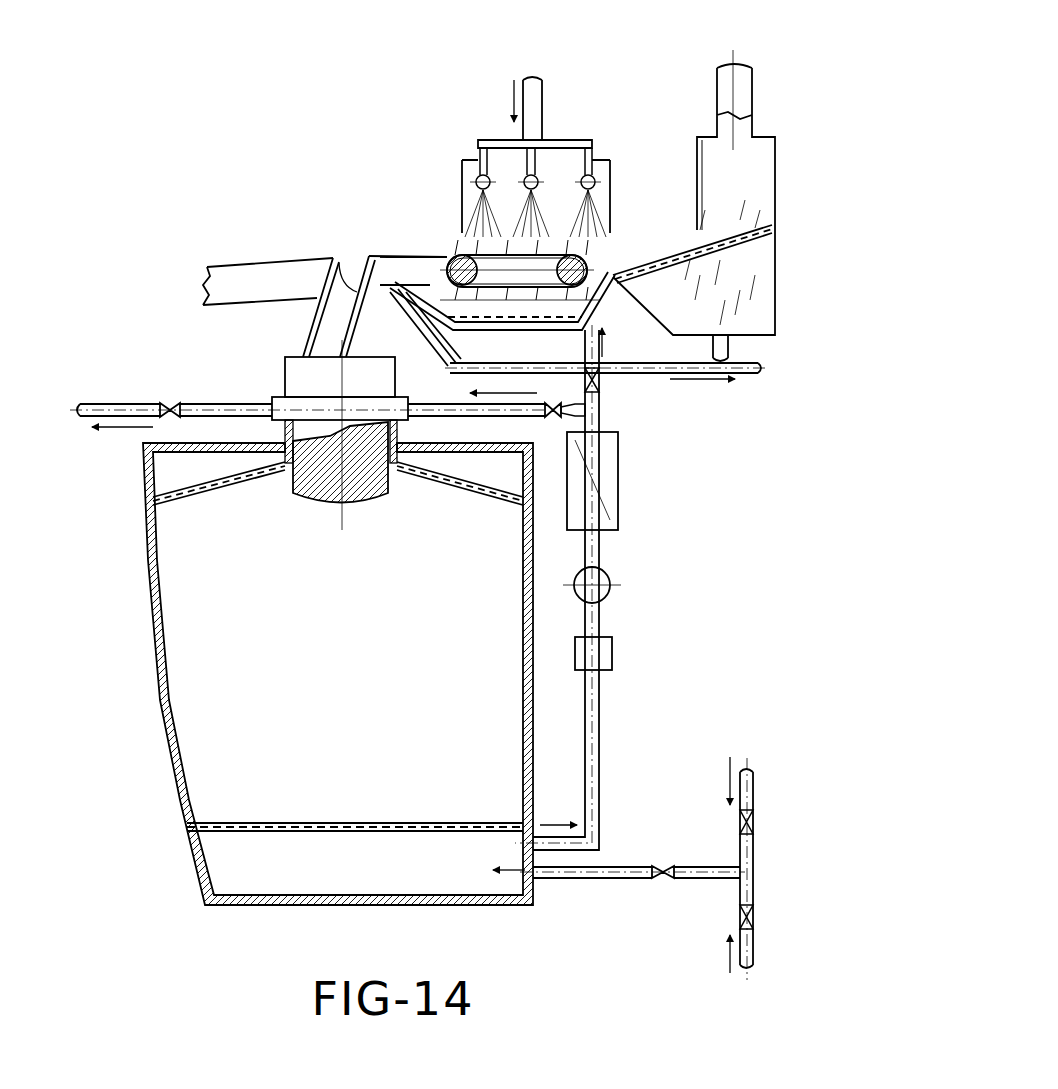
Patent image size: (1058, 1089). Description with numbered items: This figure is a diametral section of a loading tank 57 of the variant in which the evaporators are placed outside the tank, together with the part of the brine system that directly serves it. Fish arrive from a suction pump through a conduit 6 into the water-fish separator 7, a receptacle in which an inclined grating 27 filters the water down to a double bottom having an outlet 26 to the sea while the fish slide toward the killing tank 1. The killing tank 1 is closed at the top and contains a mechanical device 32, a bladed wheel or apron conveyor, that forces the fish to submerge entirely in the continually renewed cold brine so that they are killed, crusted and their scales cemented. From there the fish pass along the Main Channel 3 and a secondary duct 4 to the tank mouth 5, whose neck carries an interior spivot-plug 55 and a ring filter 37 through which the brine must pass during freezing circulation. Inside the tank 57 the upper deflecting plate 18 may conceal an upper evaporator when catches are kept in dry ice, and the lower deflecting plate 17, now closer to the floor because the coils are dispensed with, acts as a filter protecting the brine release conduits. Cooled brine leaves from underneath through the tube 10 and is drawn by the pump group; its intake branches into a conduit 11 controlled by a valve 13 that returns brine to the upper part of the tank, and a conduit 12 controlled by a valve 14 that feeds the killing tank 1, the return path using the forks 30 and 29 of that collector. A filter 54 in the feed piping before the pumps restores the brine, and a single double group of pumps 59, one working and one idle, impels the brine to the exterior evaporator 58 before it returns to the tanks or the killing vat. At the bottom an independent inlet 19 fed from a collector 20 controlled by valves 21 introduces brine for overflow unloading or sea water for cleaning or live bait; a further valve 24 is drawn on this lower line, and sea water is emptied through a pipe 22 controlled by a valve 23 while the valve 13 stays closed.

The killing tank 1 is at (462, 160).
The Main Channel 3 is at (262, 277).
The secondary duct 4 is at (343, 288).
The tank mouth 5 is at (290, 375).
The conduit 6 is at (722, 98).
The water-fish separator 7 is at (697, 152).
The tube 10 is at (604, 735).
The conduit 11 is at (527, 412).
The conduit 12 is at (600, 380).
The valve 13 is at (590, 445).
The valve 14 is at (556, 410).
The lower deflecting plate 17 is at (233, 822).
The upper deflecting plate 18 is at (190, 492).
The inlet 19 is at (607, 875).
The collector 20 is at (740, 850).
The valves 21 is at (754, 918).
The pipe 22 is at (105, 405).
The valve 23 is at (175, 405).
The valve 24 is at (663, 878).
The outlet 26 is at (727, 350).
The grating 27 is at (660, 262).
The fork 29 is at (455, 372).
The fork 30 is at (675, 370).
The mechanical device 32 is at (455, 256).
The ring filter 37 is at (365, 405).
The filter 54 is at (603, 650).
The interior spivot-plug 55 is at (293, 453).
The tank 57 is at (150, 650).
The evaporator 58 is at (607, 510).
The double group of pumps 59 is at (610, 593).